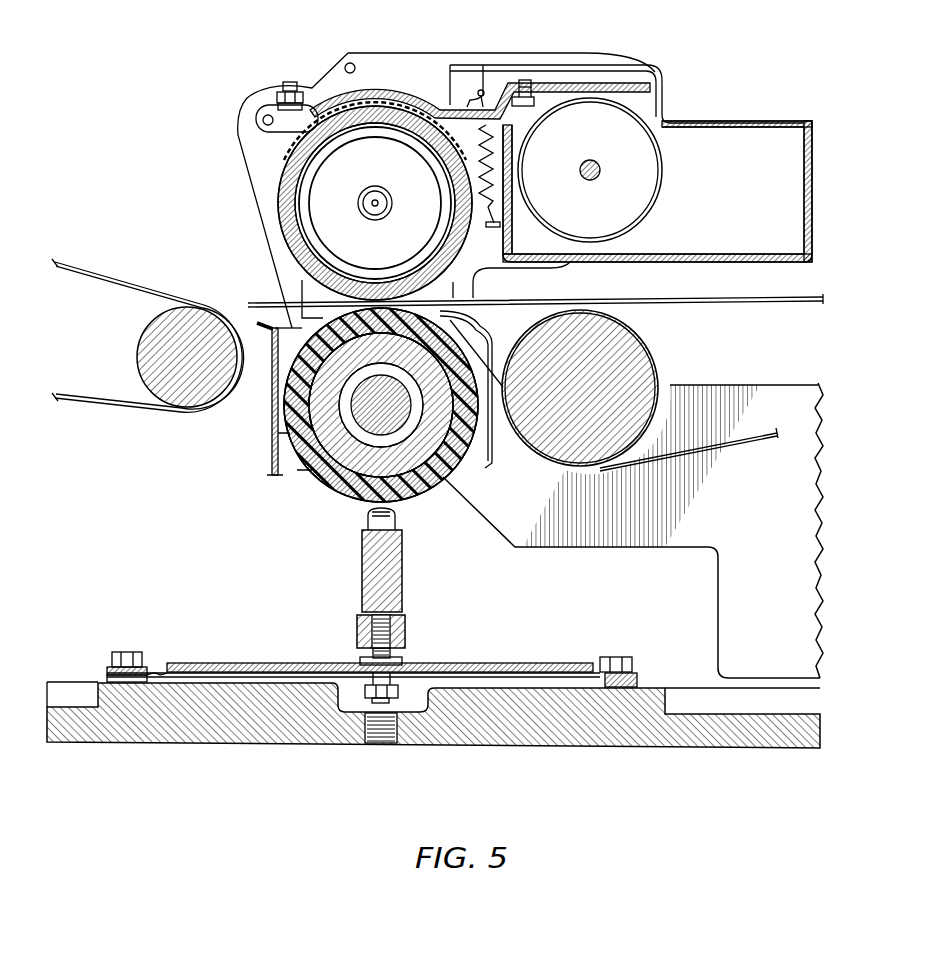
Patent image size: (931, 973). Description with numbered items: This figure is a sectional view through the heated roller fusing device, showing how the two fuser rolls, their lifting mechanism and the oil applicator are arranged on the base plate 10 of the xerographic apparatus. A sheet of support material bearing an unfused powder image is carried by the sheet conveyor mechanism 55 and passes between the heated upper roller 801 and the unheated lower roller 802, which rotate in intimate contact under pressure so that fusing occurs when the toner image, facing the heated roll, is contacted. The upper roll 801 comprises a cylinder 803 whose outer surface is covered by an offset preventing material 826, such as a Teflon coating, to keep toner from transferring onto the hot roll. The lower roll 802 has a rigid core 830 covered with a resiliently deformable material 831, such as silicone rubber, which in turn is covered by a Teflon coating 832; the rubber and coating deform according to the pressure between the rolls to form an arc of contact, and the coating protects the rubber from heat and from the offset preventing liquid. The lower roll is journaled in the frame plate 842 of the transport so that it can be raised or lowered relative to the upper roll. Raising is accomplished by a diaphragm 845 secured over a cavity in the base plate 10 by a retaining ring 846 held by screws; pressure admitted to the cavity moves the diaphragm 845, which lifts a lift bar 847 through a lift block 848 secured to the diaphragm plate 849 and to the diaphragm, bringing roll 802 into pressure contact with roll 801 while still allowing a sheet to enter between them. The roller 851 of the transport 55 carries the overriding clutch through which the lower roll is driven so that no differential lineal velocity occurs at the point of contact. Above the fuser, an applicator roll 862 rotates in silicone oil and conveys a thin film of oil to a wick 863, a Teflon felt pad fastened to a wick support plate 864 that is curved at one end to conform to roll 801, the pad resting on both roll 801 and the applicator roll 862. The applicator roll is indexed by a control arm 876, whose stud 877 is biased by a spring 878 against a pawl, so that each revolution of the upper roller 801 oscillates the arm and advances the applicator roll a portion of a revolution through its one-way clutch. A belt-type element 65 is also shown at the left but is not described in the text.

The base plate 10 is at (199, 747).
The sheet conveyor mechanism 55 is at (729, 309).
The conveyor belt 65 is at (126, 297).
The heated upper roller 801 is at (333, 203).
The unheated lower roller 802 is at (378, 416).
The cylinder 803 is at (303, 252).
The offset preventing material 826 is at (281, 212).
The rigid core 830 is at (368, 503).
The resiliently deformable material 831 is at (450, 470).
The Teflon coating 832 is at (406, 500).
The frame plate 842 is at (716, 595).
The diaphragm 845 is at (500, 680).
The retaining ring 846 is at (640, 680).
The lift bar 847 is at (403, 566).
The lift block 848 is at (406, 630).
The diaphragm plate 849 is at (482, 663).
The roller 851 is at (655, 368).
The applicator roll 862 is at (722, 160).
The wick 863 is at (423, 111).
The wick support plate 864 is at (381, 93).
The control arm 876 is at (380, 52).
The stud 877 is at (344, 67).
The spring 878 is at (494, 163).